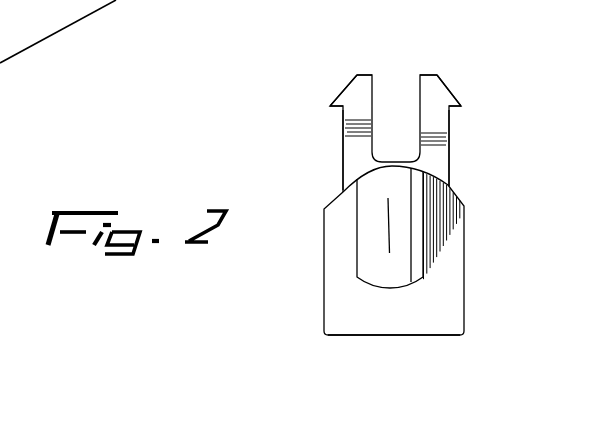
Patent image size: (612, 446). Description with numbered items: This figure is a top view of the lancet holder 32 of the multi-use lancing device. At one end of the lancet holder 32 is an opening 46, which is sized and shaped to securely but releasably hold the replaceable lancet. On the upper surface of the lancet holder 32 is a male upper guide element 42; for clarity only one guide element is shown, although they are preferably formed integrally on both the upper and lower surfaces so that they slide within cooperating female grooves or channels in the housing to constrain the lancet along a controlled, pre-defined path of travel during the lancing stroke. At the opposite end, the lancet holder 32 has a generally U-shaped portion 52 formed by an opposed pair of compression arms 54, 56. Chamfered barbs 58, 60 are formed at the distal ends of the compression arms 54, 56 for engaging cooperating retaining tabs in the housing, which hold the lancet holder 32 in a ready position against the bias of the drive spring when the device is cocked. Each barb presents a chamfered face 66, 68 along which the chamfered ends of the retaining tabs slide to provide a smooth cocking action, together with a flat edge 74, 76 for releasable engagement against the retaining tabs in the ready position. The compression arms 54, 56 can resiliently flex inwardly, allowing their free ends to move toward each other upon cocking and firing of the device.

The lancet holder 32 is at (449, 313).
The upper guide element 42 is at (393, 199).
The opening 46 is at (403, 337).
The U-shaped portion 52 is at (380, 53).
The compression arm 54 is at (358, 149).
The compression arm 56 is at (450, 150).
The chamfered barb 58 is at (363, 88).
The chamfered barb 60 is at (424, 86).
The chamfered face 66 is at (340, 84).
The chamfered face 68 is at (455, 91).
The flat edge 74 is at (333, 106).
The flat edge 76 is at (461, 107).